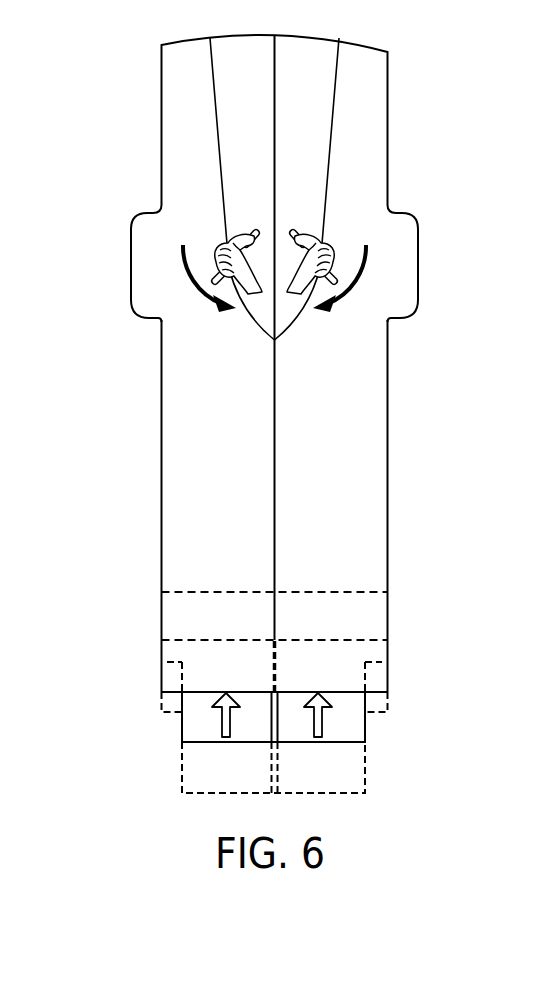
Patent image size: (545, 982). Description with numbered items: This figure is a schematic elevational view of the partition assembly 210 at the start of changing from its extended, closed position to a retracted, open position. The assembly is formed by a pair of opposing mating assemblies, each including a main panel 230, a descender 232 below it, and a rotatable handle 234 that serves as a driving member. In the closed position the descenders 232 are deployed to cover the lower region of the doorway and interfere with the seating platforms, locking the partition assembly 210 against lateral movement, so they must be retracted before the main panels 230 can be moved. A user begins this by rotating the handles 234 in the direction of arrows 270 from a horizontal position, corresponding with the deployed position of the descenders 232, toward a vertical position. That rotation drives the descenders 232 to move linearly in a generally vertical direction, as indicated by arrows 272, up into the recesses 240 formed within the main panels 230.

The partition assembly 210 is at (458, 100).
The main panel 230 is at (175, 490).
The descender 232 is at (188, 727).
The rotatable handle 234 is at (253, 234).
The recess 240 is at (172, 610).
The arrows indicating handle rotation 270 is at (187, 287).
The arrows indicating descender movement 272 is at (217, 715).